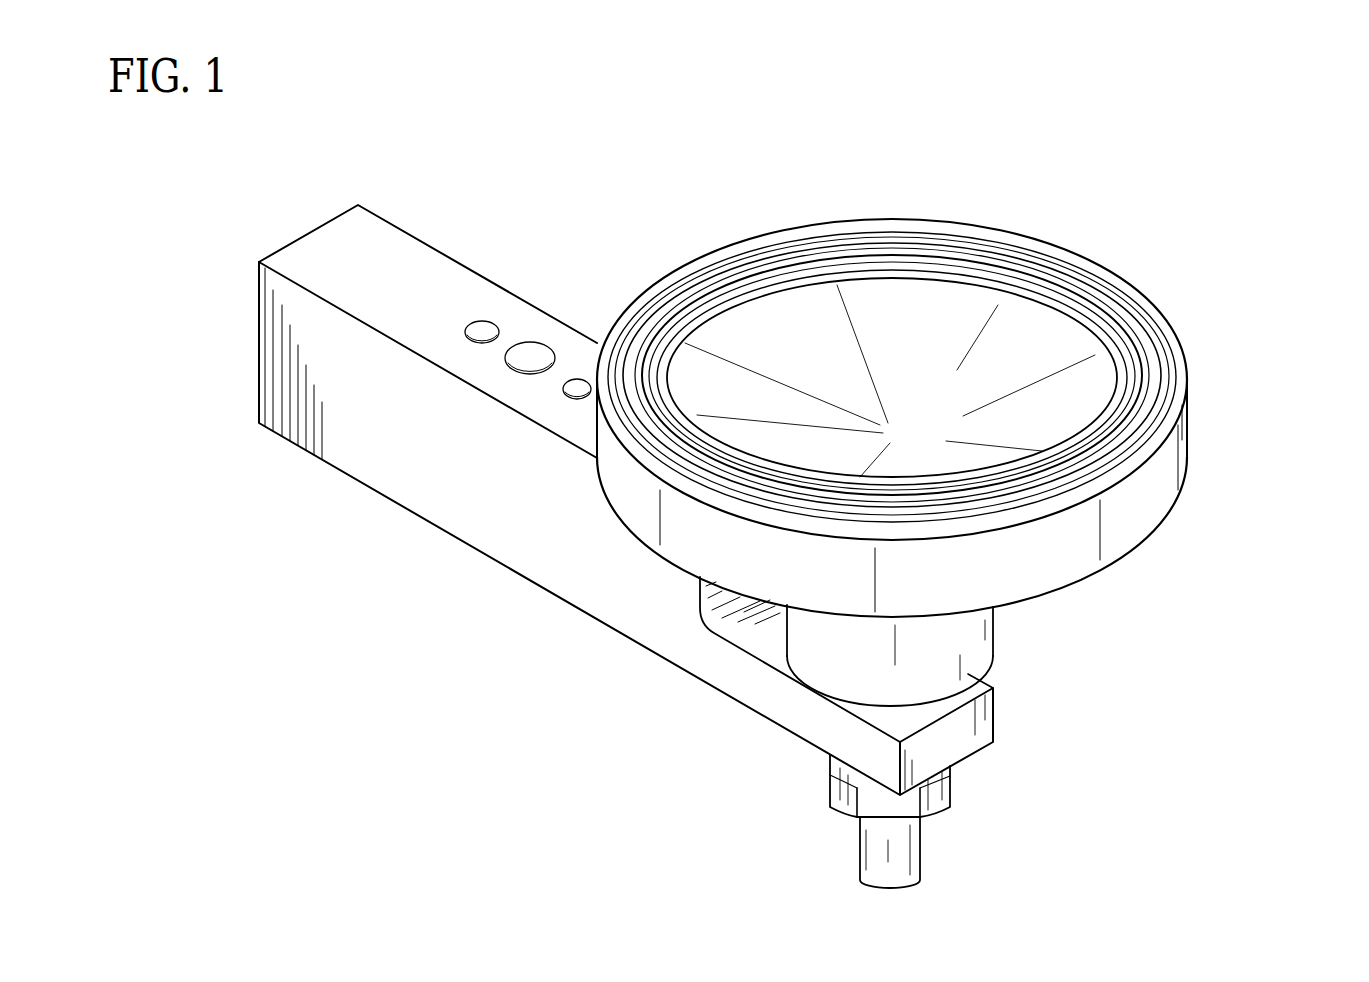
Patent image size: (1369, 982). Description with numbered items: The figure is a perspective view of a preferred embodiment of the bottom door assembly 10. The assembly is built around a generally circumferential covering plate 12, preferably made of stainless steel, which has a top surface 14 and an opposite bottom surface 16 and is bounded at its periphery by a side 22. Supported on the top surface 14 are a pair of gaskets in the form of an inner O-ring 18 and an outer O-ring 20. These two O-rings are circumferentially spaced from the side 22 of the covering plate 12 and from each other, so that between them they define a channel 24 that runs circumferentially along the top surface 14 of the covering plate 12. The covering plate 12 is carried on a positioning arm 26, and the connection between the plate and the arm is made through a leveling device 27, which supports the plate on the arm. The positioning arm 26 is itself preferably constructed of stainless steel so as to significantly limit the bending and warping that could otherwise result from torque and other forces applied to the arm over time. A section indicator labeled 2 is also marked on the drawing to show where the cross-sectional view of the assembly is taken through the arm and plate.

The bottom door assembly 10 is at (1202, 145).
The covering plate 12 is at (1135, 292).
The top surface 14 is at (890, 378).
The bottom surface 16 is at (1142, 540).
The inner O-ring 18 is at (886, 258).
The outer O-ring 20 is at (1042, 257).
The side 22 is at (1173, 452).
The channel 24 is at (958, 250).
The positioning arm 26 is at (350, 477).
The leveling device 27 is at (1025, 663).
The section line FIG. 2 is at (208, 293).